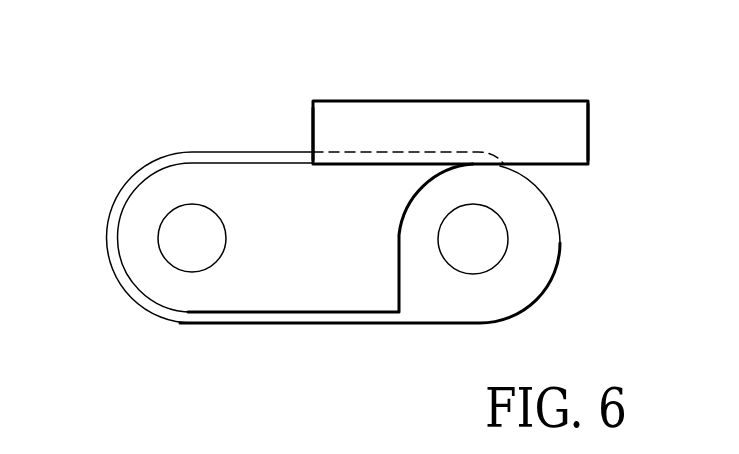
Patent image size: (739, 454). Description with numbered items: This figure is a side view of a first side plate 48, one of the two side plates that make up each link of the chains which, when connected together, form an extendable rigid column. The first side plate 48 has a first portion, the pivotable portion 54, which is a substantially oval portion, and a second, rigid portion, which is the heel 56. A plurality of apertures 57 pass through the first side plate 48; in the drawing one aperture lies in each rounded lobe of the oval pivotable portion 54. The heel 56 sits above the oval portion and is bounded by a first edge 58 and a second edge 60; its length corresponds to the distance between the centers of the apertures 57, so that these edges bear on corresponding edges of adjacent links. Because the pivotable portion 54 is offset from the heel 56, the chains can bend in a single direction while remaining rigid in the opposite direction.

The first side plate 48 is at (112, 207).
The pivotable portion 54 is at (535, 305).
The heel 56 is at (420, 100).
The apertures 57 is at (221, 258).
The first edge 58 is at (313, 130).
The second edge 60 is at (589, 137).